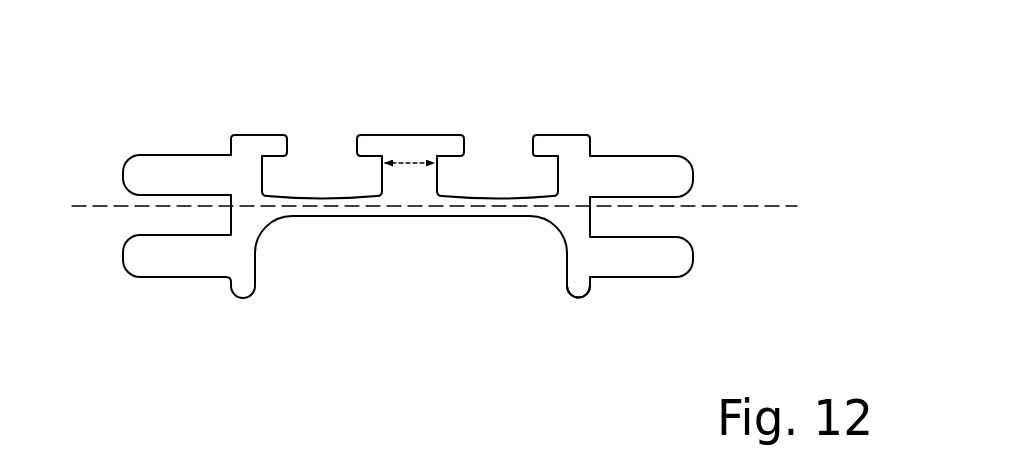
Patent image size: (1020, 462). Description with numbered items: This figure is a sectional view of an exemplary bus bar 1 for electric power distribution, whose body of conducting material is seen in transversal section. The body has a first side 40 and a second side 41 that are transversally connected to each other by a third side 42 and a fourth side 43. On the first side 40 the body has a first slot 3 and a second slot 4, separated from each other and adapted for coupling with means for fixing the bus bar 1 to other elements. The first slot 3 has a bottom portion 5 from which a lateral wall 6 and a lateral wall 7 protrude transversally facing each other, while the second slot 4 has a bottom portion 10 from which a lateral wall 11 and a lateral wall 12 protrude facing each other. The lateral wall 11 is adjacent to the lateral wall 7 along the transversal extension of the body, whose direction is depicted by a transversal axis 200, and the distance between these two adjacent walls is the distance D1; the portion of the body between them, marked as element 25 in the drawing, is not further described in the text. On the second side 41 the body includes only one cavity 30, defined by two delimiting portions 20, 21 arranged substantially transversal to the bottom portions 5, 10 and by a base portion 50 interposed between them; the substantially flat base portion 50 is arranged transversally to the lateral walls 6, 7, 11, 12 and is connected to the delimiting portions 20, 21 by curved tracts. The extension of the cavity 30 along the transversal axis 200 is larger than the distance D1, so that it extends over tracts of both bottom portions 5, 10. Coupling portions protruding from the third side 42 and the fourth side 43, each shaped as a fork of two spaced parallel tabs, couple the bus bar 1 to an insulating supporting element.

The bus bar 1 is at (665, 52).
The first slot 3 is at (300, 173).
The second slot 4 is at (525, 169).
The bottom portion 5 is at (315, 192).
The lateral wall 6 is at (267, 178).
The lateral wall 7 is at (373, 176).
The bottom portion 10 is at (509, 190).
The lateral wall 11 is at (445, 175).
The lateral wall 12 is at (550, 176).
The delimiting portion 20 is at (239, 282).
The delimiting portion 21 is at (581, 259).
The rib end 25 is at (412, 181).
The cavity 30 is at (334, 256).
The first side 40 is at (253, 129).
The second side 41 is at (578, 309).
The third side 42 is at (223, 137).
The fourth side 43 is at (594, 143).
The base portion 50 is at (457, 221).
The transversal axis 200 is at (790, 203).
The distance D1 is at (413, 157).